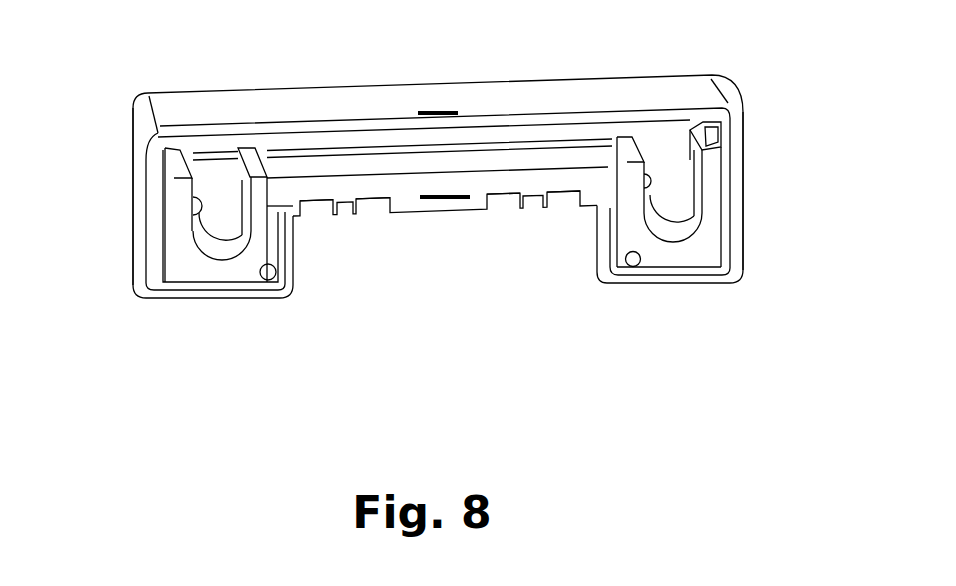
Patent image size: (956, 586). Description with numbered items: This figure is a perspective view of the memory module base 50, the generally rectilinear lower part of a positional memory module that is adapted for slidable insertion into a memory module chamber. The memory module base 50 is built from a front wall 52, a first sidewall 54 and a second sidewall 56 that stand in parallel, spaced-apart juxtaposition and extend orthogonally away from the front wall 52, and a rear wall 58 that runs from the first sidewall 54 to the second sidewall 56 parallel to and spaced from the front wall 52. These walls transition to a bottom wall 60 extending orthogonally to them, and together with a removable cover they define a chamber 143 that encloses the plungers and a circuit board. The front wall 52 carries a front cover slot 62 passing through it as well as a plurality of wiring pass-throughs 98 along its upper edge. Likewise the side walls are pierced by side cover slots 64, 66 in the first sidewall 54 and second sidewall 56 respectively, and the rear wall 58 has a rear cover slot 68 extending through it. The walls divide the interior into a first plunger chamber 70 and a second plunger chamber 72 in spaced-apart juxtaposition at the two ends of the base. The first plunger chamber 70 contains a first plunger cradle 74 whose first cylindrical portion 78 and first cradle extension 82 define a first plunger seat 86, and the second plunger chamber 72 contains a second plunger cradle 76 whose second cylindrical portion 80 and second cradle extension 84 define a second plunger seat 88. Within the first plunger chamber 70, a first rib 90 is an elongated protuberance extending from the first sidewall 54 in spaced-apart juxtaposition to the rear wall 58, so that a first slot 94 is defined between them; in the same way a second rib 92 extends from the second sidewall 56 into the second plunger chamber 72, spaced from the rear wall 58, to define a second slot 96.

The memory module base 50 is at (754, 190).
The front wall 52 is at (412, 212).
The first sidewall 54 is at (153, 177).
The second sidewall 56 is at (738, 218).
The rear wall 58 is at (340, 103).
The bottom wall 60 is at (553, 132).
The front cover slot 62 is at (443, 199).
The side cover slot 64 is at (147, 213).
The side cover slot 66 is at (735, 178).
The rear cover slot 68 is at (438, 112).
The first plunger chamber 70 is at (196, 264).
The second plunger chamber 72 is at (686, 254).
The first plunger cradle 74 is at (251, 273).
The second plunger cradle 76 is at (660, 253).
The first cylindrical portion 78 is at (222, 248).
The second cylindrical portion 80 is at (692, 227).
The first cradle extension 82 is at (199, 200).
The second cradle extension 84 is at (647, 189).
The first plunger seat 86 is at (221, 196).
The second plunger seat 88 is at (665, 170).
The first rib 90 is at (158, 156).
The second rib 92 is at (712, 146).
The first slot 94 is at (172, 143).
The second slot 96 is at (708, 127).
The wiring pass-throughs 98 is at (377, 204).
The chamber 143 is at (495, 155).